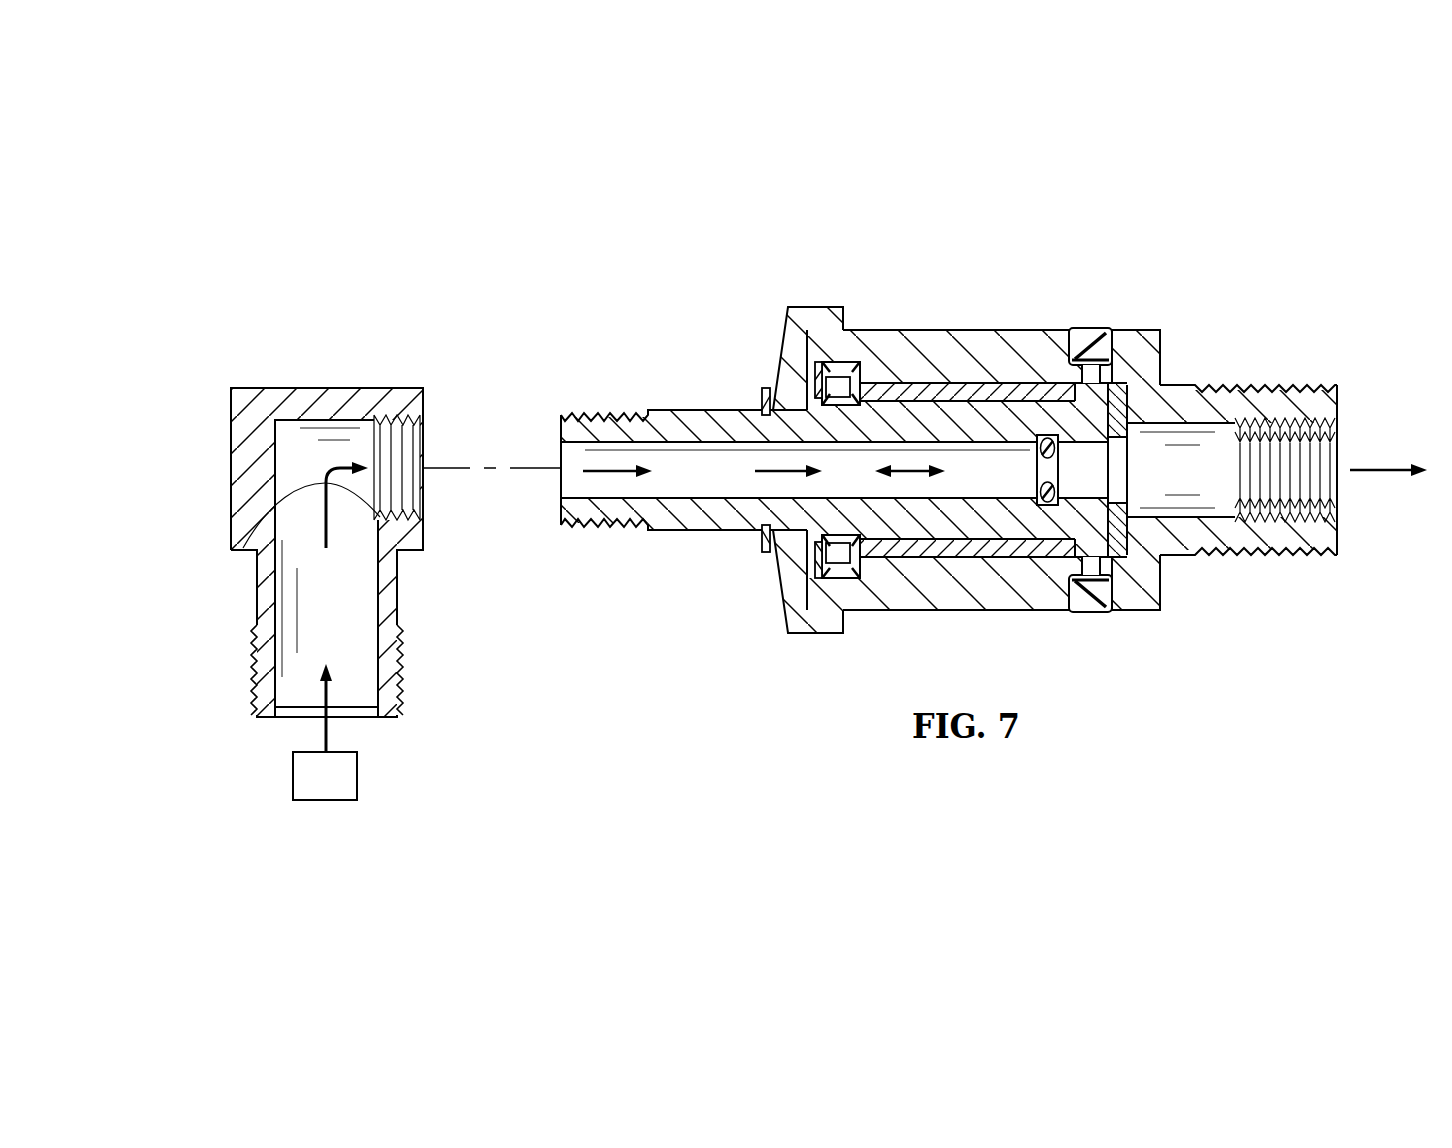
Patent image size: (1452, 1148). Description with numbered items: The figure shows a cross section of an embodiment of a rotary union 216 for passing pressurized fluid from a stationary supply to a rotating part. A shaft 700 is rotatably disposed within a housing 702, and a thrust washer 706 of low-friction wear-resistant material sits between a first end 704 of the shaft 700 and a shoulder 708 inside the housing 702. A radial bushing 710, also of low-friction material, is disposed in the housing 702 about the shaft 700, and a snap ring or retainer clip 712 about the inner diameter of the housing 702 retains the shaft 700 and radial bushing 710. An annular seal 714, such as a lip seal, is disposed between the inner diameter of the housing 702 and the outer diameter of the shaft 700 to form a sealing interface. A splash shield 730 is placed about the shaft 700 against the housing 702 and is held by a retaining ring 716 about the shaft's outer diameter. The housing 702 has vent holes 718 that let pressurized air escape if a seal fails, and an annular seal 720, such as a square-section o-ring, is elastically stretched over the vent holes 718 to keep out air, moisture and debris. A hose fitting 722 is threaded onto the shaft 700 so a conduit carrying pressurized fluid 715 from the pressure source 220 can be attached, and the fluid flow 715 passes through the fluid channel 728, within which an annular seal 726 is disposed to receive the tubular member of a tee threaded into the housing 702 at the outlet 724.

The rotary union 216 is at (961, 432).
The pressure source 220 is at (318, 800).
The shaft 700 is at (655, 410).
The housing 702 is at (1016, 330).
The first end of the shaft 704 is at (1120, 510).
The thrust washer 706 is at (1140, 375).
The shoulder 708 is at (1130, 427).
The radial bushing 710 is at (950, 385).
The snap ring or retainer clip 712 is at (815, 380).
The annular seal 714 is at (840, 360).
The pressurized fluid / fluid flow 715 is at (320, 511).
The retaining ring 716 is at (762, 398).
The vent holes 718 is at (1112, 350).
The annular seal 720 is at (1090, 328).
The hose fitting 722 is at (312, 388).
The outlet 724 is at (1340, 447).
The annular seal 726 is at (1037, 455).
The fluid channel 728 is at (567, 483).
The splash shield 730 is at (790, 618).